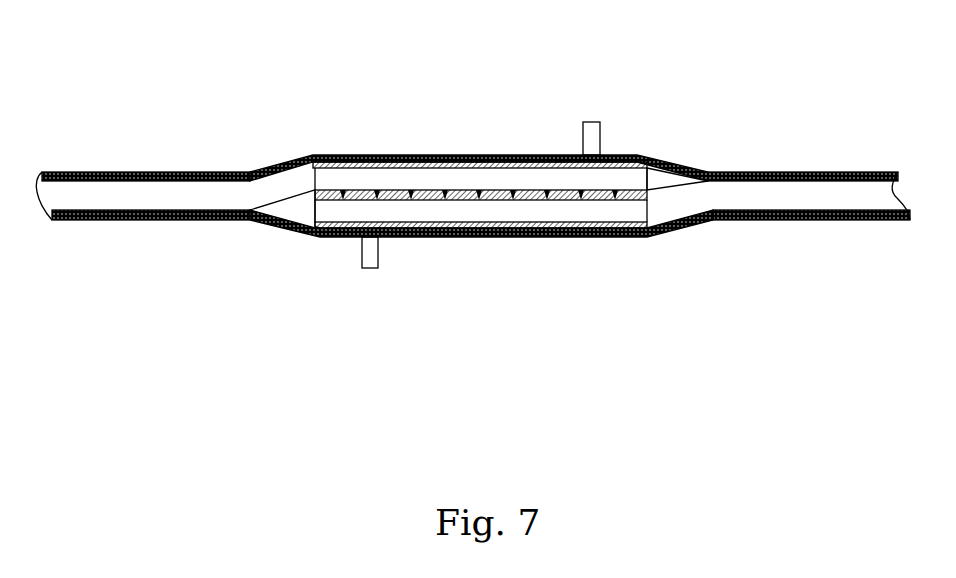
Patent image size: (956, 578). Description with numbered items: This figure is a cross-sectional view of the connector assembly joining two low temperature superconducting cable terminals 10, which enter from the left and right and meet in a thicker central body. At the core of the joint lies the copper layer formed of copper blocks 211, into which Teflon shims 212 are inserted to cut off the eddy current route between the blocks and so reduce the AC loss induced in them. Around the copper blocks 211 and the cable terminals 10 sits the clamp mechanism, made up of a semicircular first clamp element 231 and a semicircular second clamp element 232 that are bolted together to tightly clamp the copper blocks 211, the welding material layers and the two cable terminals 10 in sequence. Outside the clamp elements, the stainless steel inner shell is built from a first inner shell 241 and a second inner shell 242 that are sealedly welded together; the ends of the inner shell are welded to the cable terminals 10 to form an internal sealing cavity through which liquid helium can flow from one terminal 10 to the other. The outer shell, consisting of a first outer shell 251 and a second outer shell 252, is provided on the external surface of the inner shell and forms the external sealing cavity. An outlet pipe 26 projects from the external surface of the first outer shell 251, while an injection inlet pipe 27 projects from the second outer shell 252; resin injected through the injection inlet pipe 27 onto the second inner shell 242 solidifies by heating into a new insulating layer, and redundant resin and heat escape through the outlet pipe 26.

The low temperature superconducting cable terminal 10 is at (278, 187).
The first inner shell 241 is at (395, 155).
The second inner shell 242 is at (478, 237).
The first clamp element 231 is at (466, 157).
The second clamp element 232 is at (518, 237).
The first outer shell 251 is at (520, 155).
The second outer shell 252 is at (417, 237).
The copper block 211 is at (638, 190).
The Teflon shim 212 is at (582, 192).
The outlet pipe 26 is at (593, 143).
The injection inlet pipe 27 is at (369, 270).